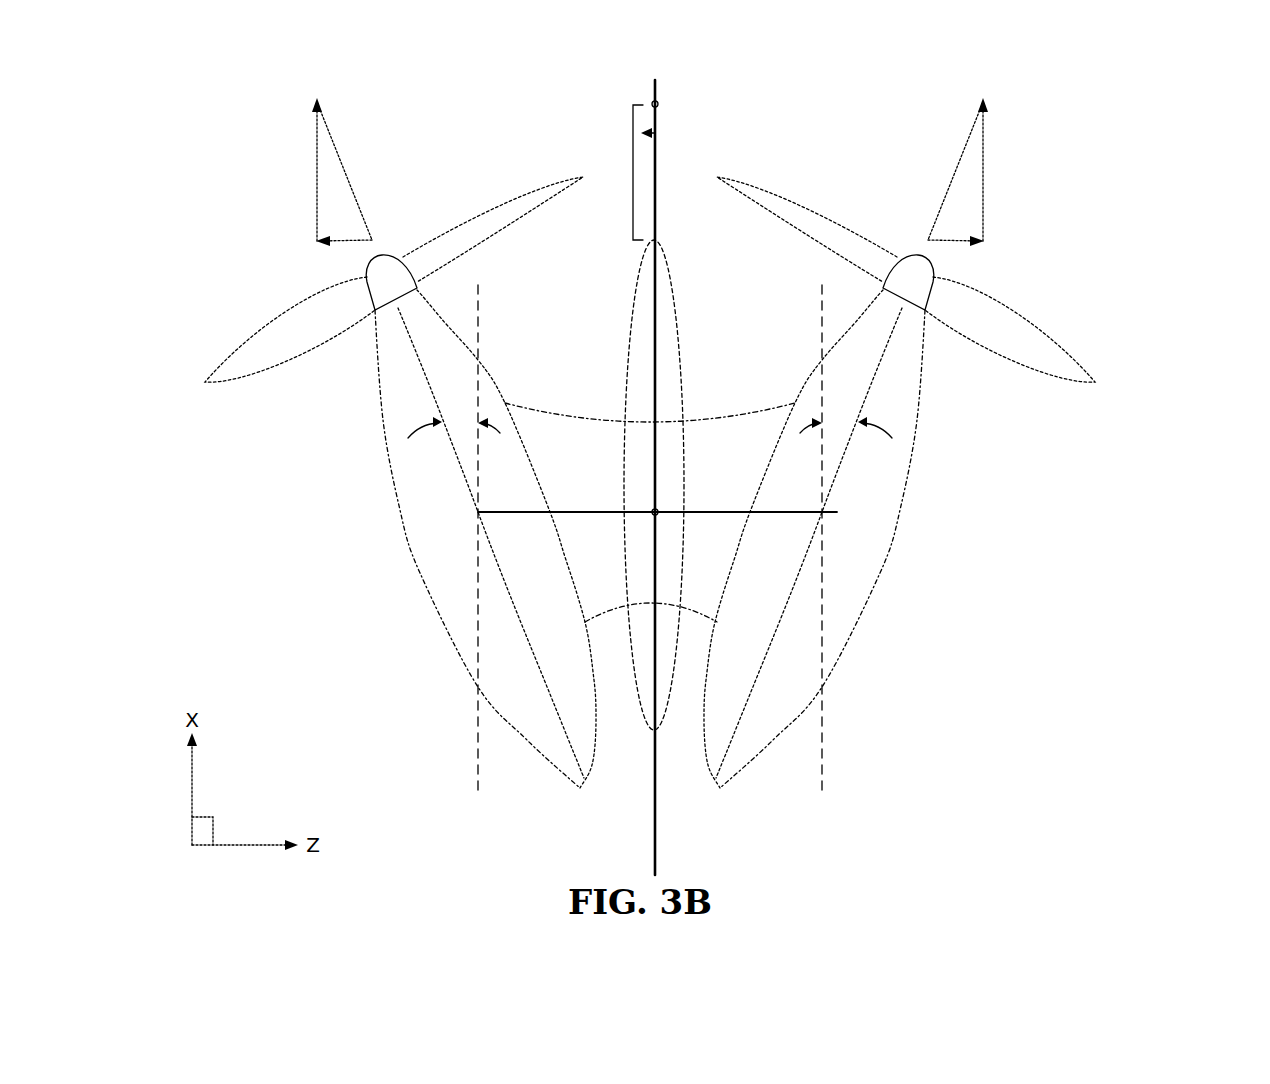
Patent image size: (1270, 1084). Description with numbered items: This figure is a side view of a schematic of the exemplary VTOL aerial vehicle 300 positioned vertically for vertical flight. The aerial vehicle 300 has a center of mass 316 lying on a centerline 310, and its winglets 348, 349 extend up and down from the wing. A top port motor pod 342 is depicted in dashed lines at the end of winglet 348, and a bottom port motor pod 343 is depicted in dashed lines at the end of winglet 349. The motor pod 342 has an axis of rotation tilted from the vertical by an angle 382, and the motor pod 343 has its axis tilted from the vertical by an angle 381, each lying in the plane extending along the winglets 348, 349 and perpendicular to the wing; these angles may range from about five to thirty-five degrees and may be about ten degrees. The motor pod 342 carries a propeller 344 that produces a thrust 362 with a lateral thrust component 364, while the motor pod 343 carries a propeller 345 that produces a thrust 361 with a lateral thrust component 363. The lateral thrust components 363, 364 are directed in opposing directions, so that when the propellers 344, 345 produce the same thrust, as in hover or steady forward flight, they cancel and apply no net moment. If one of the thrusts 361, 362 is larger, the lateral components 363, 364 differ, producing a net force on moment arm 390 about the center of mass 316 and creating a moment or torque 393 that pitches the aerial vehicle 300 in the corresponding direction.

The VTOL aerial vehicle 300 is at (1165, 180).
The centerline 310 is at (655, 848).
The center of mass 316 is at (660, 104).
The top port motor pod 342 is at (888, 578).
The bottom port motor pod 343 is at (410, 575).
The propeller 344 is at (1075, 358).
The propeller 345 is at (228, 358).
The winglet 348 is at (714, 512).
The winglet 349 is at (588, 512).
The thrust 361 is at (338, 151).
The thrust 362 is at (960, 151).
The lateral thrust component 363 is at (350, 243).
The lateral thrust component 364 is at (950, 243).
The angle 381 is at (444, 441).
The angle 382 is at (856, 443).
The moment arm 390 is at (633, 173).
The moment or torque 393 is at (658, 136).